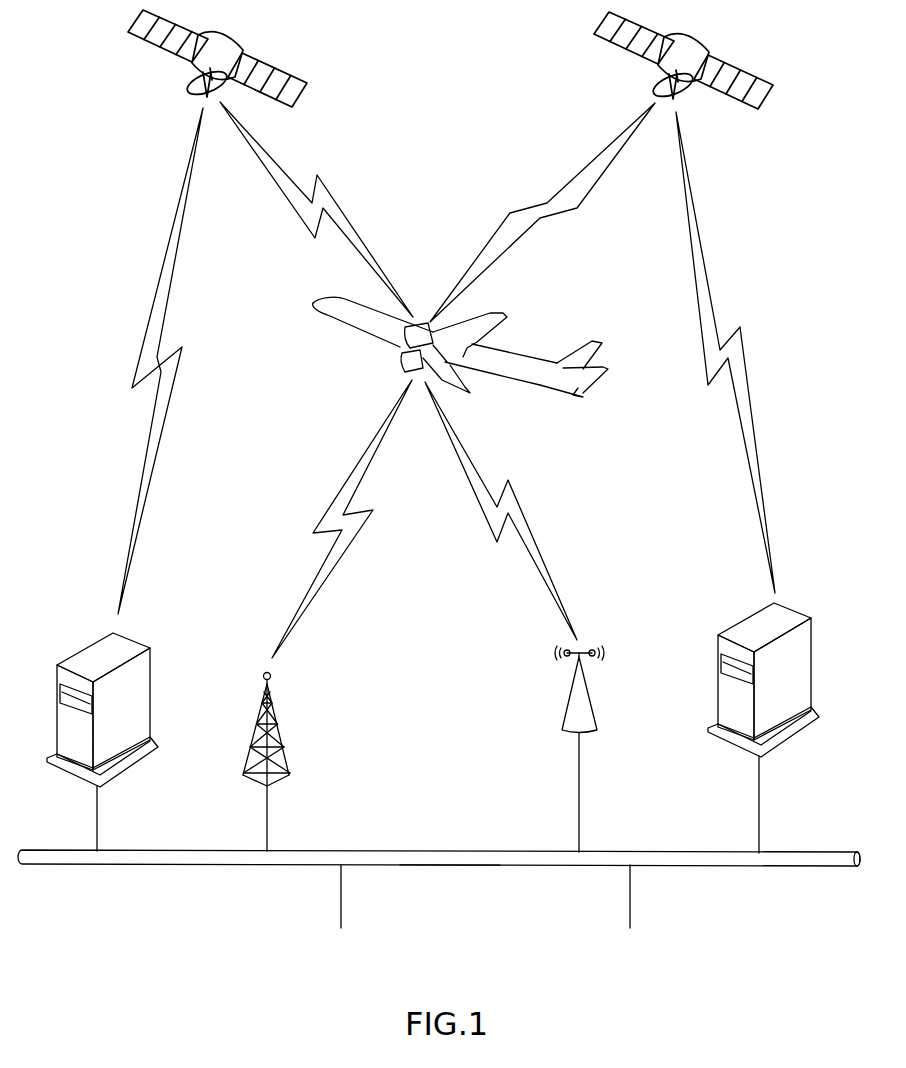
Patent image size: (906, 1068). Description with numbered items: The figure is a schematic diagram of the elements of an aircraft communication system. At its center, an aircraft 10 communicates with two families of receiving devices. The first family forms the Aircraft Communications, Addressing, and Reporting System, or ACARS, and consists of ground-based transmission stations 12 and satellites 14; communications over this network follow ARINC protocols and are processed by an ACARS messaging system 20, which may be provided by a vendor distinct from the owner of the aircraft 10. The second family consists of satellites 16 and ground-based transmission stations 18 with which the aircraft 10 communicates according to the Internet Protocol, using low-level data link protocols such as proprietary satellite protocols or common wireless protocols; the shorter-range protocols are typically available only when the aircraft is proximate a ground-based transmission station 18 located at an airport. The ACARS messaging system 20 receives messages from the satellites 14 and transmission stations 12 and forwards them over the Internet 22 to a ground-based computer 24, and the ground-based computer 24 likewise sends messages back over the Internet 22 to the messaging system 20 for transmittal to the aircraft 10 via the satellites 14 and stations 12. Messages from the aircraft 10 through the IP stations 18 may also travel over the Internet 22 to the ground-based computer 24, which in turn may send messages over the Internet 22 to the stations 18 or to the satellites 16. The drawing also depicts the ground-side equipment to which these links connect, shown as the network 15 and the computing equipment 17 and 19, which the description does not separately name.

The aircraft 10 is at (460, 347).
The ground-based transmission station 12 is at (290, 762).
The satellite 14 is at (236, 56).
The ground network 15 is at (439, 870).
The satellite 16 is at (689, 57).
The ground station server 17 is at (118, 727).
The ground-based transmission station 18 is at (601, 749).
The ground station server 19 is at (763, 702).
The ACARS messaging system 20 is at (192, 602).
The Internet 22 is at (445, 866).
The ground-based computer 24 is at (808, 616).